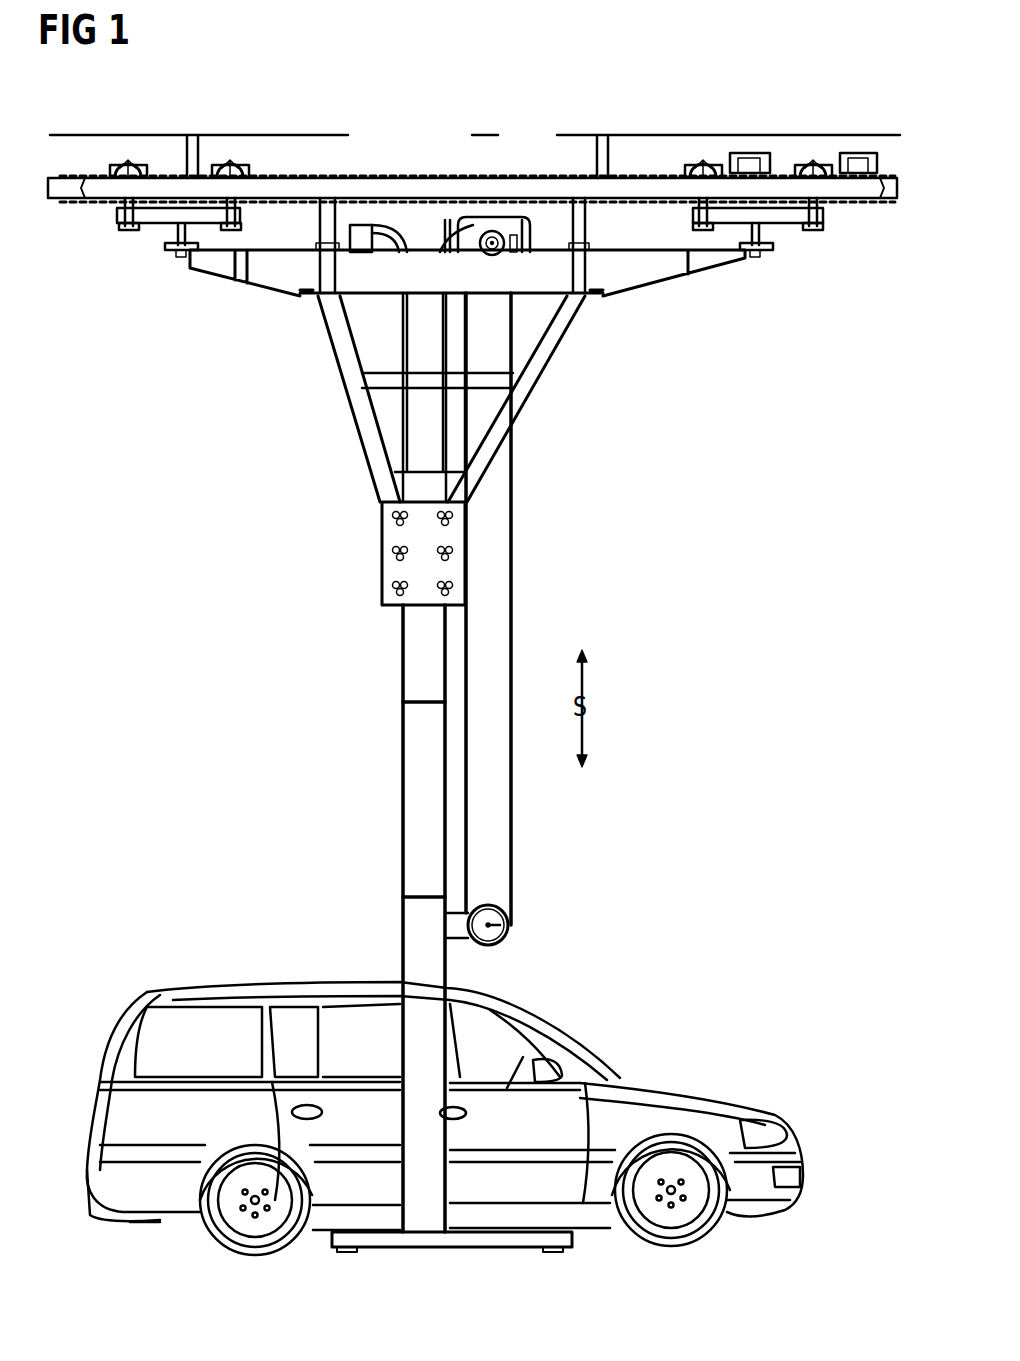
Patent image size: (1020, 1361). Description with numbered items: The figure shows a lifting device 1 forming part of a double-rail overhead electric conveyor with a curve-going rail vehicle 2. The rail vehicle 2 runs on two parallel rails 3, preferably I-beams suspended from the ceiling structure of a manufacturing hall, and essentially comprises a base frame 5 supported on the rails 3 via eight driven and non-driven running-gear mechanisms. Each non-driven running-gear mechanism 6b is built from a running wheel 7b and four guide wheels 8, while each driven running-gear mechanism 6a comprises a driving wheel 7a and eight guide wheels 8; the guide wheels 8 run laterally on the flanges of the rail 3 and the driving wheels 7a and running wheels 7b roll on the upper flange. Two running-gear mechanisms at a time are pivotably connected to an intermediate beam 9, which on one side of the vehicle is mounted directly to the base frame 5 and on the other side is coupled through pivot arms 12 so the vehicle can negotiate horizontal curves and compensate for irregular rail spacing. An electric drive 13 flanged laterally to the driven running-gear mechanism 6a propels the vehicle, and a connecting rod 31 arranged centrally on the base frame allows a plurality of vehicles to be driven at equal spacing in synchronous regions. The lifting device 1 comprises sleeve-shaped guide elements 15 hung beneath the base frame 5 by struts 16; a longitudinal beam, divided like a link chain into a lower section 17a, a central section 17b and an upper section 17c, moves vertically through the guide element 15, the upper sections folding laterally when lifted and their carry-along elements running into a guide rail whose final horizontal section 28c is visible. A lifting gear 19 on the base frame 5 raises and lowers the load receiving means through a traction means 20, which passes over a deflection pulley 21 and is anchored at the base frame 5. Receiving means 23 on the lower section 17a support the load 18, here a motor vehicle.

The lifting device 1 is at (222, 579).
The rail vehicle 2 is at (472, 222).
The rail 3 is at (328, 196).
The base frame 5 is at (467, 247).
The driven running-gear mechanism 6a is at (816, 157).
The non-driven running-gear mechanism 6b is at (244, 157).
The driving wheel 7a is at (705, 157).
The running wheel 7b is at (132, 157).
The guide wheel 8 is at (122, 232).
The intermediate beam 9 is at (163, 220).
The pivot arm 12 is at (625, 268).
The electric drive 13 is at (750, 153).
The guide element 15 is at (418, 571).
The strut 16 is at (513, 403).
The lower section of longitudinal beam 17a is at (412, 933).
The central section of longitudinal beam 17b is at (412, 800).
The upper section of longitudinal beam 17c is at (412, 655).
The load 18 is at (585, 1062).
The lifting gear 19 is at (513, 228).
The traction means 20 is at (513, 548).
The deflection pulley 21 is at (505, 930).
The receiving means 23 is at (475, 1243).
The horizontal section of guide rail 28c is at (362, 226).
The connecting rod 31 is at (56, 178).